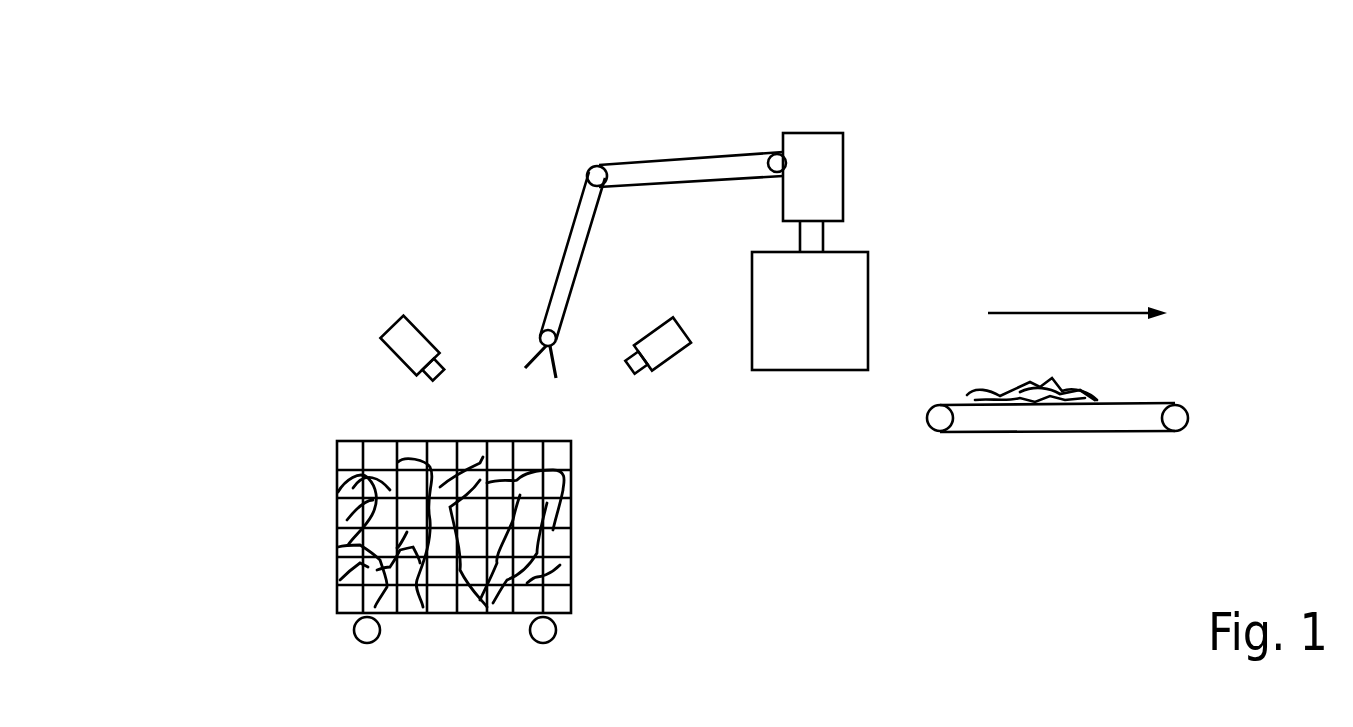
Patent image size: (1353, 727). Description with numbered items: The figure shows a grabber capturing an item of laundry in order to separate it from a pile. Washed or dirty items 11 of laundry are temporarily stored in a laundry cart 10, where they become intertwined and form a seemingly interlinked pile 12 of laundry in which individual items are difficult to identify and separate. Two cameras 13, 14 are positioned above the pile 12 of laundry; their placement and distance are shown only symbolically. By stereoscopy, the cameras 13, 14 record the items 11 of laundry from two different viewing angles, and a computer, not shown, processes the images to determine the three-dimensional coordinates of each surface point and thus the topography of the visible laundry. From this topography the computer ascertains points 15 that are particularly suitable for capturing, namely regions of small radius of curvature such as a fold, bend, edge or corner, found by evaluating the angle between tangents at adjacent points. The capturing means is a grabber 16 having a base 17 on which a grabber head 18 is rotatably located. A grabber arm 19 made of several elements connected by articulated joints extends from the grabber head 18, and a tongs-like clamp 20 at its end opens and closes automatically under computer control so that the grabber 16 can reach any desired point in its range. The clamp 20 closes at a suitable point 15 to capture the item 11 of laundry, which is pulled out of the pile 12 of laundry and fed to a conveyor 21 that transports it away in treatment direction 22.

The laundry cart 10 is at (581, 501).
The item of laundry 11 is at (377, 487).
The pile of laundry 12 is at (370, 415).
The camera 13 is at (408, 316).
The camera 14 is at (677, 365).
The point 15 is at (1030, 382).
The grabber 16 is at (647, 145).
The base 17 is at (847, 268).
The grabber head 18 is at (822, 131).
The grabber arm 19 is at (570, 243).
The clamp 20 is at (523, 368).
The conveyor 21 is at (1108, 440).
The treatment direction 22 is at (1043, 313).